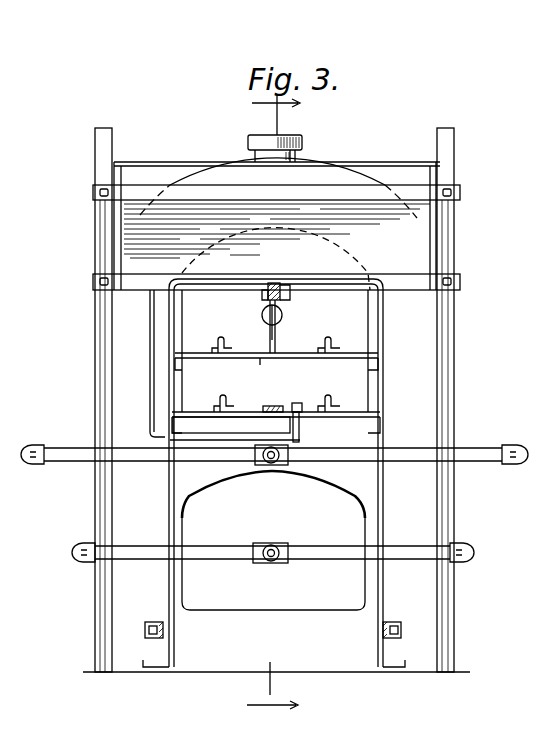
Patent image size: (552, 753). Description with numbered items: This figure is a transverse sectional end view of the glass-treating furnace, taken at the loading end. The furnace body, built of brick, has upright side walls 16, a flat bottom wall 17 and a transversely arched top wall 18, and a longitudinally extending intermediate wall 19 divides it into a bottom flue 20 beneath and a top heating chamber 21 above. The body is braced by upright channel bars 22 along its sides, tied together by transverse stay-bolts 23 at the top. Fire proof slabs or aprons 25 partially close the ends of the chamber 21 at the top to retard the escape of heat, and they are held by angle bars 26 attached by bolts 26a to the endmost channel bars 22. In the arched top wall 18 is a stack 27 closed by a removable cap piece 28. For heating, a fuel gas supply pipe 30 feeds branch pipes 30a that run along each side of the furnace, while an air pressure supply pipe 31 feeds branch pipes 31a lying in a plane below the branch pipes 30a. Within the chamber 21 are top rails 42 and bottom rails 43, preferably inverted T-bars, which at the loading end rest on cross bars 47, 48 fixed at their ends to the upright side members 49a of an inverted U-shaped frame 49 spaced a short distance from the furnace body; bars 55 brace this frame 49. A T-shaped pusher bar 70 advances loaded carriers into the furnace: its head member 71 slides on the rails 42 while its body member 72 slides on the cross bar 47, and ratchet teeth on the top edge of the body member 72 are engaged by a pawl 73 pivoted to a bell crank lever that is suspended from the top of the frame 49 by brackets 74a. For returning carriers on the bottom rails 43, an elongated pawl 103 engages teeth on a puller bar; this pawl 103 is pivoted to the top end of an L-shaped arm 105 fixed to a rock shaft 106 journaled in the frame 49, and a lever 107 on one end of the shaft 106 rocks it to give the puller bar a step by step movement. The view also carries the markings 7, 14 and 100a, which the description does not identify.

The section line 7- 7 is at (286, 409).
The plunger 14 is at (268, 285).
The upright side walls 16 is at (273, 299).
The flat bottom wall 17 is at (262, 612).
The transversely arched top wall 18 is at (232, 168).
The intermediate wall 19 is at (202, 475).
The bottom flue 20 is at (318, 494).
The top heating compartment or chamber 21 is at (300, 316).
The upright channel bars 22 is at (104, 128).
The top transverse stay-bolts 23 is at (332, 165).
The fire proof slabs or aprons 25 is at (282, 256).
The angle bars 26 is at (276, 238).
The bolts 26a is at (93, 280).
The stacks 27 is at (304, 143).
The removable cap pieces 28 is at (256, 142).
The fuel gas supply pipe 30 is at (270, 466).
The fuel gas branch pipes 30a is at (520, 440).
The air pressure supply pipe 31 is at (275, 543).
The air pressure branch pipes 31a is at (470, 532).
The top rails 42 is at (228, 333).
The bottom rails 43 is at (340, 390).
The cross bar 47 is at (318, 358).
The cross bar 48 is at (276, 431).
The inverted U-shaped frame 49 is at (158, 508).
The upright side members 49a is at (395, 322).
The bars 55 is at (163, 630).
The T-shaped pusher bar 70 is at (283, 347).
The head member 71 is at (262, 365).
The body member 72 is at (270, 338).
The pawl 73 is at (280, 318).
The brackets 74a is at (290, 285).
The contact block 100a is at (261, 407).
The elongated pawl 103 is at (298, 403).
The L-shaped arm 105 is at (299, 442).
The rock shaft 106 is at (232, 431).
The lever 107 is at (150, 360).